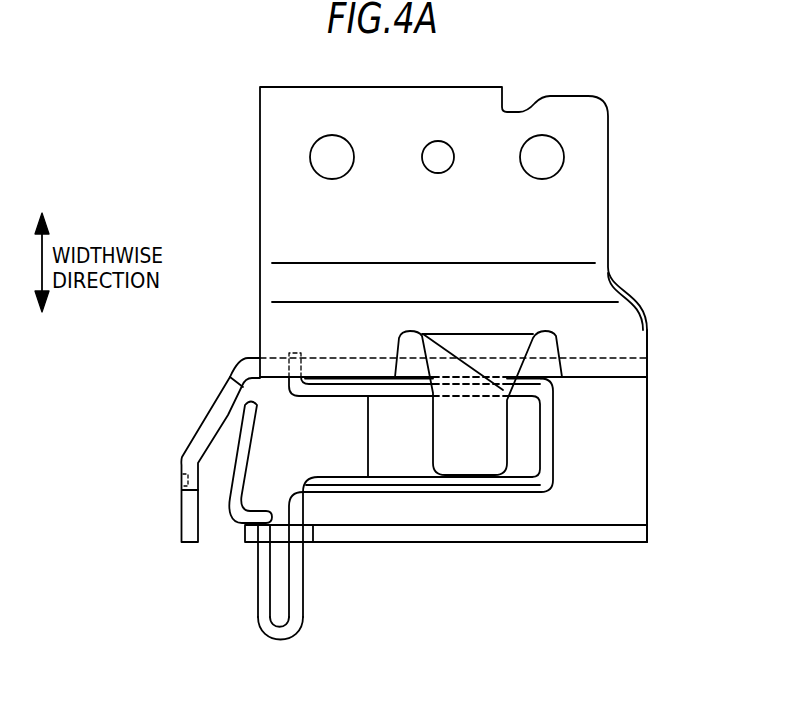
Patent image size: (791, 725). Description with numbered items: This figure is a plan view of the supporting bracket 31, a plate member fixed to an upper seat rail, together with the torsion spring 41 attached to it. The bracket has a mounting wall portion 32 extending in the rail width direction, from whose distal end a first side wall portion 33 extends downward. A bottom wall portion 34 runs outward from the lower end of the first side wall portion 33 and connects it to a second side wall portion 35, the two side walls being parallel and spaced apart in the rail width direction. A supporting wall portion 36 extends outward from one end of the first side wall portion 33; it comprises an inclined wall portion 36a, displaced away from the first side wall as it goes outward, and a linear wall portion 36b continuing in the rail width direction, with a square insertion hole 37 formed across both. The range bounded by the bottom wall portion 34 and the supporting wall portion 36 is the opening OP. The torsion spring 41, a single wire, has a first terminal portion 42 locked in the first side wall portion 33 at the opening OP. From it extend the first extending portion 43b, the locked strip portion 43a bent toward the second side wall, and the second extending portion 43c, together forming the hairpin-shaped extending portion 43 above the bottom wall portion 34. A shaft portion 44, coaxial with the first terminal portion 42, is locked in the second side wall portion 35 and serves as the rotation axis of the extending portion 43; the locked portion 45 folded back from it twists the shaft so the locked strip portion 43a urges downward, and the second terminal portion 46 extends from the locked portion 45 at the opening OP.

The supporting bracket 31 is at (603, 155).
The mounting wall portion 32 is at (272, 189).
The first side wall portion 33 is at (617, 377).
The bottom wall portion 34 is at (633, 487).
The second side wall portion 35 is at (597, 543).
The supporting wall portion 36 is at (188, 543).
The inclined wall portion 36a is at (218, 393).
The linear wall portion 36b is at (181, 518).
The insertion hole 37 is at (186, 484).
The torsion spring 41 is at (277, 642).
The first terminal portion 42 is at (287, 365).
The extending portion 43 is at (472, 492).
The locked strip portion 43a is at (553, 435).
The first extending portion 43b is at (347, 390).
The second extending portion 43c is at (403, 492).
The shaft portion 44 is at (303, 595).
The locked portion 45 is at (257, 603).
The second terminal portion 46 is at (217, 490).
The opening OP is at (320, 447).